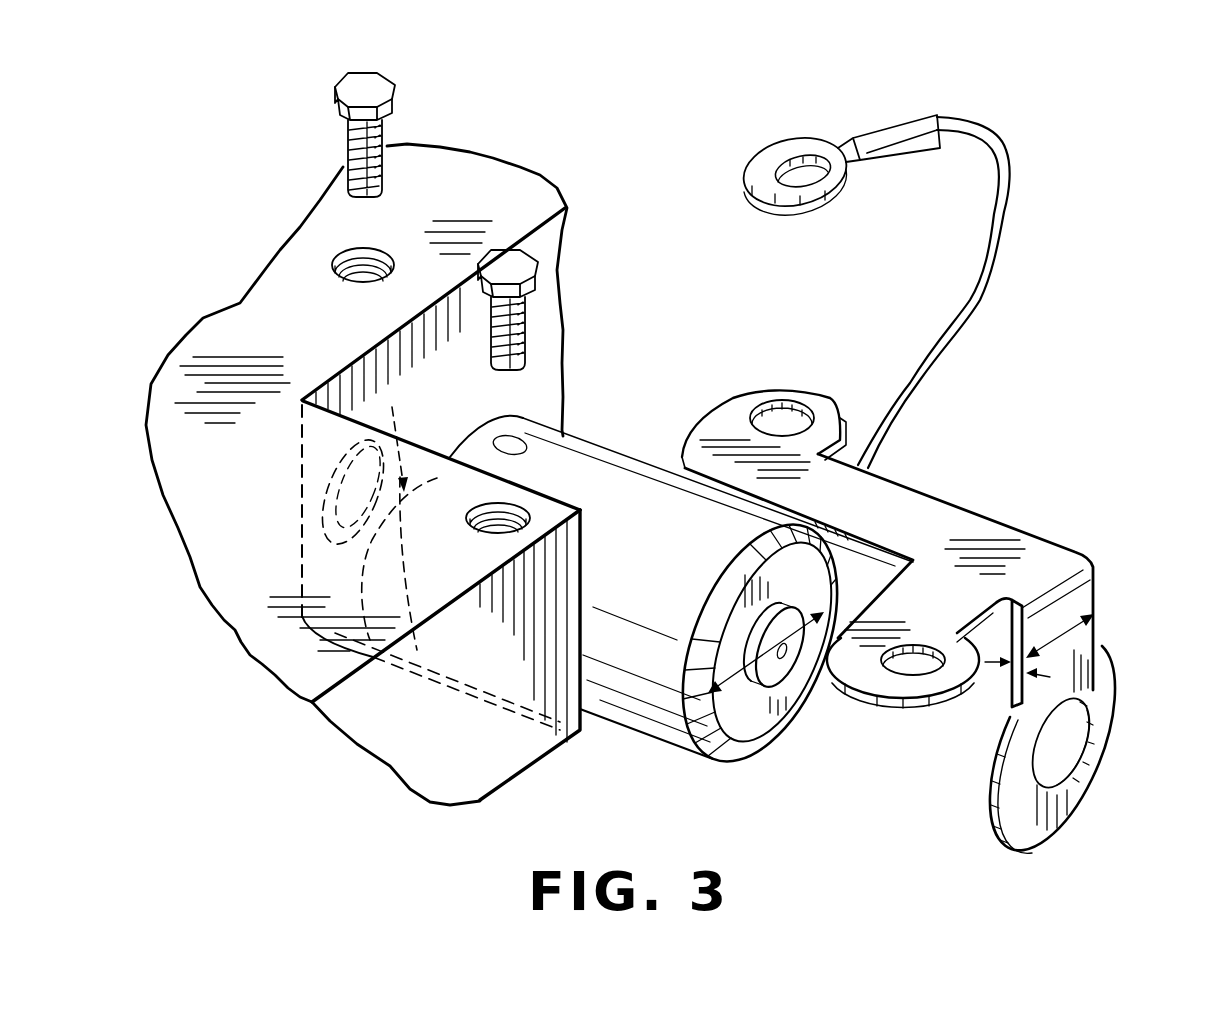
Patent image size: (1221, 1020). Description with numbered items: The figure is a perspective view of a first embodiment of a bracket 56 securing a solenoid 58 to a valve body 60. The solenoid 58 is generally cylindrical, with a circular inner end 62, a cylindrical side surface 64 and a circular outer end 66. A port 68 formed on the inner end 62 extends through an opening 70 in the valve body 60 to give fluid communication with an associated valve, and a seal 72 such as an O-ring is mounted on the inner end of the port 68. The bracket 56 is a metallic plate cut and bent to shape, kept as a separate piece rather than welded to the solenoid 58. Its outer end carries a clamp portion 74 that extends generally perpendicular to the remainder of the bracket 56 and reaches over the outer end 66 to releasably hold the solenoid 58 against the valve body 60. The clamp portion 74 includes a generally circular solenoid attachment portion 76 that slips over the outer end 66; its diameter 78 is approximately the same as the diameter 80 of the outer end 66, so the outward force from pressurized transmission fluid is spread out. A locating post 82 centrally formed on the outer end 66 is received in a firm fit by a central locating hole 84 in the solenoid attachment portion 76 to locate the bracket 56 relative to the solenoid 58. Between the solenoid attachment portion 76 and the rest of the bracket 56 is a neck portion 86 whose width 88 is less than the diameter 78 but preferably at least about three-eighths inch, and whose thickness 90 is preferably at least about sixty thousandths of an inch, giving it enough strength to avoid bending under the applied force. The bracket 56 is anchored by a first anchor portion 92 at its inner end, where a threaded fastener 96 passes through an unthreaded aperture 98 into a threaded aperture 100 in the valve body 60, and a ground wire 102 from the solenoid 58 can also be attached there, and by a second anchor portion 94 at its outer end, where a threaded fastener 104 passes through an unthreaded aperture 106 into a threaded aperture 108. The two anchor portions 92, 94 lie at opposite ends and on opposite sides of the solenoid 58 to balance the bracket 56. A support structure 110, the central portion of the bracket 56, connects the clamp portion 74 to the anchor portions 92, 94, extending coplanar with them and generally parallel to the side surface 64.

The bracket 56 is at (1110, 550).
The solenoid 58 is at (626, 451).
The valve body 60 is at (287, 290).
The circular inner end 62 is at (467, 435).
The cylindrical side surface 64 is at (573, 460).
The circular outer end 66 is at (745, 598).
The port 68 is at (393, 435).
The opening 70 is at (327, 517).
The seal 72 is at (403, 523).
The clamp portion 74 is at (1103, 667).
The solenoid attachment portion 76 is at (1097, 743).
The diameter 78 is at (1017, 827).
The diameter 80 is at (723, 750).
The locating post 82 is at (781, 675).
The locating hole 84 is at (1070, 773).
The neck portion 86 is at (1080, 642).
The width 88 is at (1062, 603).
The thickness 90 is at (990, 660).
The first anchor portion 92 is at (757, 400).
The second anchor portion 94 is at (917, 693).
The threaded fastener 96 is at (383, 103).
The unthreaded aperture 98 is at (797, 405).
The threaded aperture 100 is at (385, 246).
The ground wire 102 is at (840, 147).
The threaded fastener 104 is at (527, 260).
The unthreaded aperture 106 is at (910, 653).
The threaded aperture 108 is at (510, 535).
The support structure 110 is at (1000, 540).